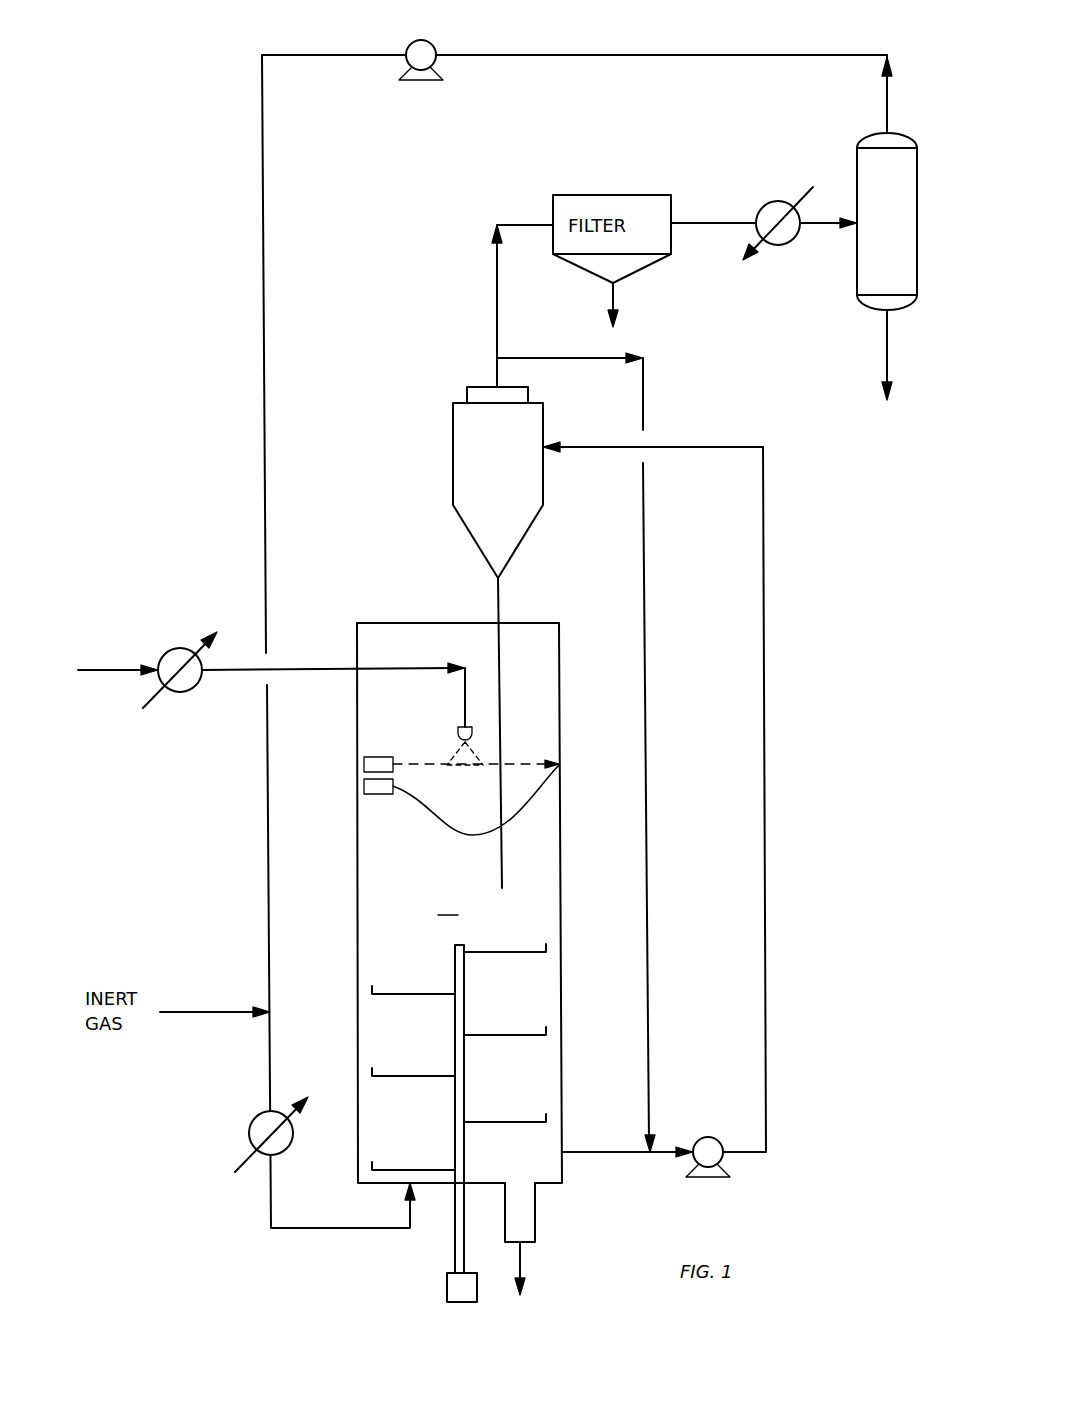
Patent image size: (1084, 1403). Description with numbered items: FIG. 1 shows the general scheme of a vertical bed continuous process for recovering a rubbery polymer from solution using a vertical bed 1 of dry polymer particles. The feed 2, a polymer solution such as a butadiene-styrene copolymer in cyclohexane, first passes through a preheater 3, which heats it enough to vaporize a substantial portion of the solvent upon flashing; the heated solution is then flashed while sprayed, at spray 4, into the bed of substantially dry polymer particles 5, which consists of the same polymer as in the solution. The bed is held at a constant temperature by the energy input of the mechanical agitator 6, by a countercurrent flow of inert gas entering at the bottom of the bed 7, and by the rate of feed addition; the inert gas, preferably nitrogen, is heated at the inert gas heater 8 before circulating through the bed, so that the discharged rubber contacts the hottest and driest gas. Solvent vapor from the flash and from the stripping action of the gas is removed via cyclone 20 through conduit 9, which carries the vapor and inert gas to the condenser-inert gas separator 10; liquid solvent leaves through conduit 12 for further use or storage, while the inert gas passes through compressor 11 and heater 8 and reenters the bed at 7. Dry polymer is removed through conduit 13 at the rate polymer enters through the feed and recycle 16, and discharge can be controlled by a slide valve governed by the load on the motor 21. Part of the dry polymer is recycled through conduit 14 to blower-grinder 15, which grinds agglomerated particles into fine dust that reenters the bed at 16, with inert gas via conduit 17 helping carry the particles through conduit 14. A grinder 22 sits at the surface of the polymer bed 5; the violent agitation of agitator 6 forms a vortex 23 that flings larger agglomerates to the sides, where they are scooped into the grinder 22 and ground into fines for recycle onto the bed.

The vertical bed 1 is at (356, 914).
The feed 2 is at (102, 667).
The preheater 3 is at (180, 645).
The spray 4 is at (457, 727).
The bed of substantially dry polymer particles 5 is at (448, 904).
The mechanical agitator 6 is at (455, 1250).
The bottom of the bed 7 is at (408, 1200).
The inert gas heater 8 is at (249, 1133).
The conduit 9 is at (495, 300).
The condenser-inert gas separator 10 is at (855, 152).
The compressor 11 is at (405, 44).
The conduit 12 is at (884, 348).
The conduit 13 is at (522, 1262).
The conduit 14 is at (603, 1160).
The blower-grinder 15 is at (710, 1136).
The recycle 16 is at (500, 602).
The conduit 17 is at (648, 618).
The cyclone 20 is at (453, 452).
The motor 21 is at (460, 1305).
The grinder 22 is at (378, 756).
The vortex 23 is at (448, 832).